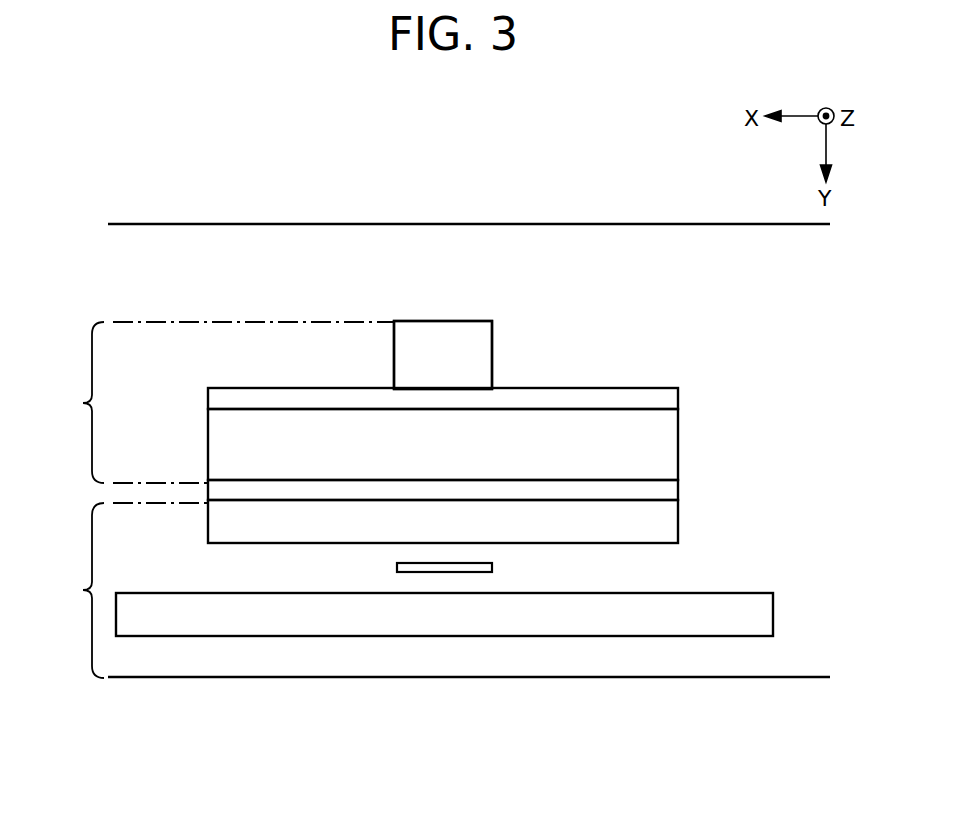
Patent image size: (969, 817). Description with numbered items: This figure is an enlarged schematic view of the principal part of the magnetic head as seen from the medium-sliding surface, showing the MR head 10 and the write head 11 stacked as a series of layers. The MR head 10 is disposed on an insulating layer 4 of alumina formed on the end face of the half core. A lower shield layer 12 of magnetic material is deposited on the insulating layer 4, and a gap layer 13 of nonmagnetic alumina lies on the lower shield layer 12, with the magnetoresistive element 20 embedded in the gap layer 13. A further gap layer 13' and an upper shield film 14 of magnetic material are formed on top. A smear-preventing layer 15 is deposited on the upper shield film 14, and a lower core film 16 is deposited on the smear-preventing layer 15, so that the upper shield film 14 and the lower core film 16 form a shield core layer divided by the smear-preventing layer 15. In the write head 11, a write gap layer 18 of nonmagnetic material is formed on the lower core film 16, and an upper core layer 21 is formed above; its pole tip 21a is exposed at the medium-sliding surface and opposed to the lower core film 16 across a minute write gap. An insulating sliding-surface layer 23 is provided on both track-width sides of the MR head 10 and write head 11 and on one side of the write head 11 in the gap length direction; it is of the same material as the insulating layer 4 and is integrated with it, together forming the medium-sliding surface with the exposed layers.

The insulating sliding-surface layer 23 is at (236, 254).
The upper core layer 21 is at (445, 342).
The pole tip 21a is at (443, 355).
The write gap layer 18 is at (667, 397).
The lower core film 16 is at (668, 447).
The smear-preventing layer 15 is at (668, 488).
The upper shield film 14 is at (670, 525).
The write head 11 is at (221, 402).
The MR head 10 is at (128, 590).
The magnetoresistive element 20 is at (472, 575).
The gap layer 13 is at (441, 656).
The gap layer 13' is at (444, 647).
The lower shield layer 12 is at (735, 623).
The insulating layer 4 is at (292, 657).